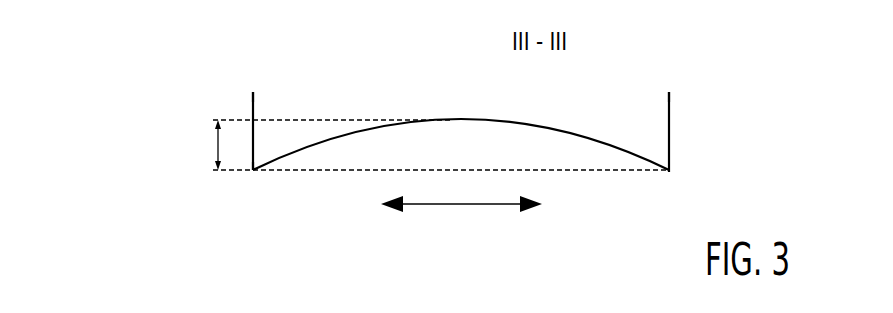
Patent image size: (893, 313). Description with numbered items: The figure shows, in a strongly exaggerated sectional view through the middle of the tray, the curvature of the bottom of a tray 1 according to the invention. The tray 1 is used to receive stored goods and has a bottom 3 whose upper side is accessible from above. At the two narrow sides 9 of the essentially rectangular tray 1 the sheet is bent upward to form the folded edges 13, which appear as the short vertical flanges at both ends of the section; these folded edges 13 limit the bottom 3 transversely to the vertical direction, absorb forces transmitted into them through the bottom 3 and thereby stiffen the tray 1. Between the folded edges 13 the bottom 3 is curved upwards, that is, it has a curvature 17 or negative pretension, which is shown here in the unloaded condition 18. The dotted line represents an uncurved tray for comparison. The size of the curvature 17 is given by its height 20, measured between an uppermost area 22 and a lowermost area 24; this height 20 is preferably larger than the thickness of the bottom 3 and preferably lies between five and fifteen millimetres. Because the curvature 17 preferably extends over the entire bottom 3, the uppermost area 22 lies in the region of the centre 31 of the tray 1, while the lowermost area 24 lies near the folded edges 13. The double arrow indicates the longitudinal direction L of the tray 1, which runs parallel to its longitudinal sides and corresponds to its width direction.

The tray 1 is at (639, 74).
The bottom 3 is at (563, 132).
The narrow sides 9 is at (250, 110).
The folded edges 13 is at (253, 98).
The curvature 17 is at (355, 98).
The unloaded condition 18 is at (357, 112).
The height 20 is at (213, 150).
The uppermost area 22 is at (460, 79).
The centre 31 is at (456, 119).
The lowermost area 24 is at (254, 168).
The longitudinal direction L is at (456, 206).